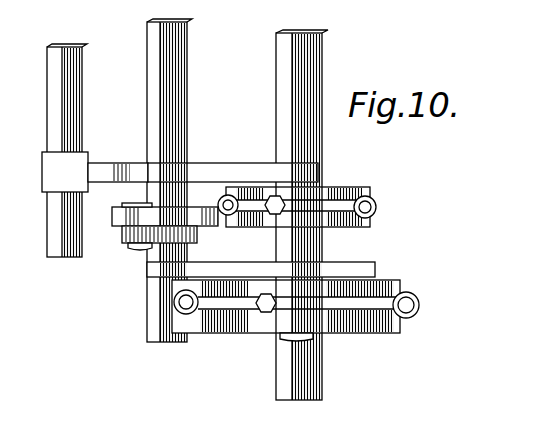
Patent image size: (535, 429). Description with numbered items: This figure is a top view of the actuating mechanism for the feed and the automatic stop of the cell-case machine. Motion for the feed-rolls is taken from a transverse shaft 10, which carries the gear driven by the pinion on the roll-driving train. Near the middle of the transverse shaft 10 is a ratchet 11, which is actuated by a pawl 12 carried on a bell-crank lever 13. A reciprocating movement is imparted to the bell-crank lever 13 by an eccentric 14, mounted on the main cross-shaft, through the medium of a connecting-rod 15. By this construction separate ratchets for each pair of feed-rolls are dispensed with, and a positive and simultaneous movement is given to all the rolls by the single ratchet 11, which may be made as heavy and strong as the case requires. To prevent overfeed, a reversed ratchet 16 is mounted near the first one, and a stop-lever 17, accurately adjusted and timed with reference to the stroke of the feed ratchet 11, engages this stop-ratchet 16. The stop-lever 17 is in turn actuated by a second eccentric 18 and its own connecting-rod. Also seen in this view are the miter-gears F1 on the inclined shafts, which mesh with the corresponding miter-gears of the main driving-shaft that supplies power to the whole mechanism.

The transverse shaft 10 is at (147, 311).
The ratchet 11 is at (208, 226).
The pawl 12 is at (133, 229).
The bell-crank lever 13 is at (143, 259).
The eccentric 14 is at (347, 338).
The connecting-rod 15 is at (67, 150).
The reversed ratchet 16 is at (136, 164).
The stop-lever 17 is at (240, 170).
The eccentric 18 is at (342, 192).
The miter-gears F1 is at (276, 124).